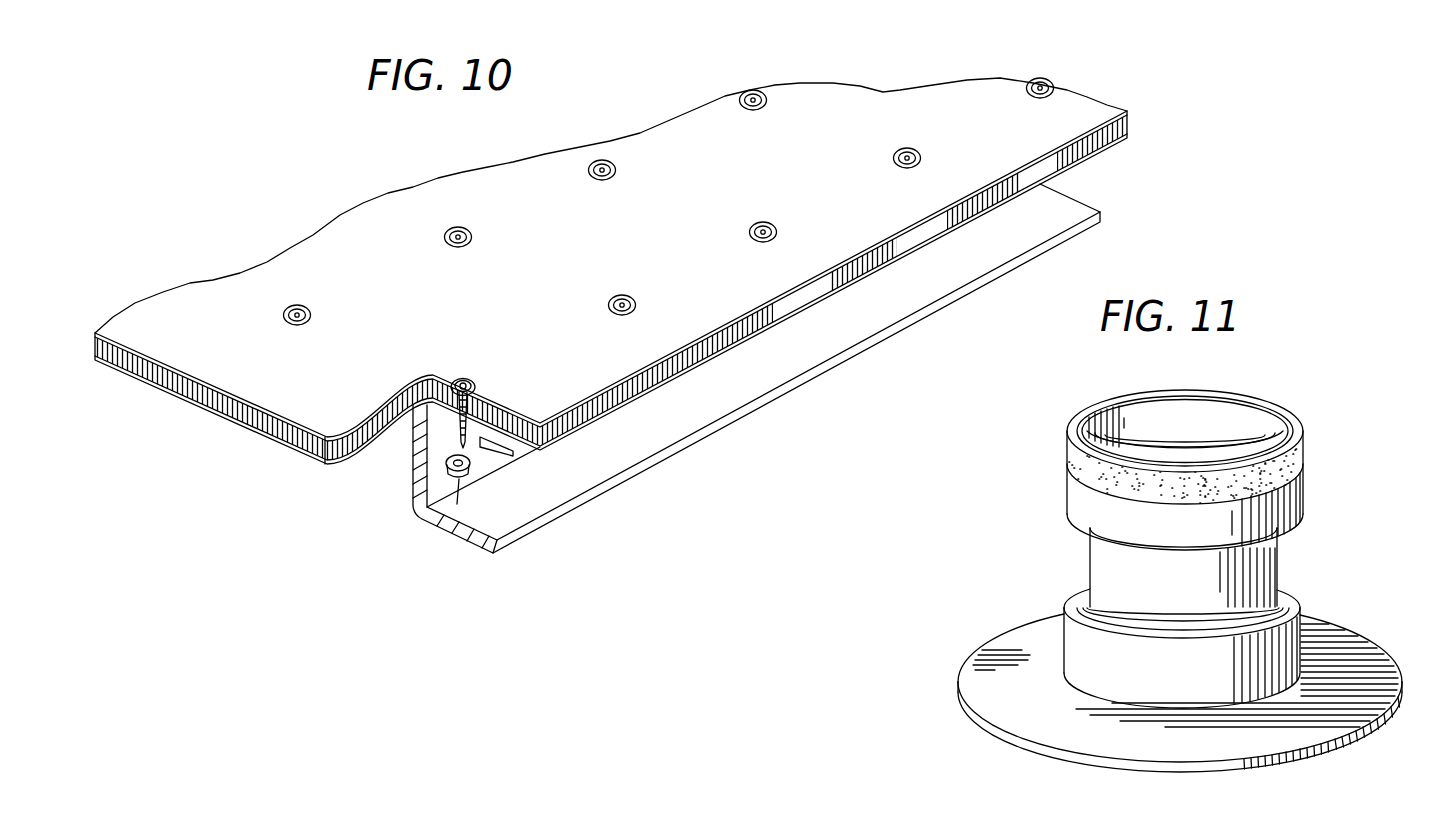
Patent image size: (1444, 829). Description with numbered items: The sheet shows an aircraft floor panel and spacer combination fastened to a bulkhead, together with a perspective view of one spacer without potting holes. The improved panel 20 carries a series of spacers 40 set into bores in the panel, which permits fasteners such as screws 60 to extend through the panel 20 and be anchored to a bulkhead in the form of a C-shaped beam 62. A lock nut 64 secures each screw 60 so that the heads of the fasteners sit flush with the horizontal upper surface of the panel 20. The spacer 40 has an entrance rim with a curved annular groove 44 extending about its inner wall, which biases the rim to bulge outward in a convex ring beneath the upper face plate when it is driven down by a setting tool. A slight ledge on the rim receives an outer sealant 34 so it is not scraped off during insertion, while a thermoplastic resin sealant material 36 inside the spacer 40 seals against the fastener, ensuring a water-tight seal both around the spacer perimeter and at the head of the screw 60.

In FIG. 10, the panel 20 is at (650, 157).
In FIG. 11, the outer sealant 34 is at (1303, 447).
In FIG. 11, the thermoplastic resin sealant material 36 is at (1193, 460).
In FIG. 10, the spacer 40 is at (446, 377).
In FIG. 11, the spacer 40 is at (1050, 511).
In FIG. 11, the curved annular groove 44 is at (1146, 444).
In FIG. 10, the screw 60 is at (463, 379).
In FIG. 10, the C-shaped beam 62 is at (772, 367).
In FIG. 10, the lock nut 64 is at (471, 463).